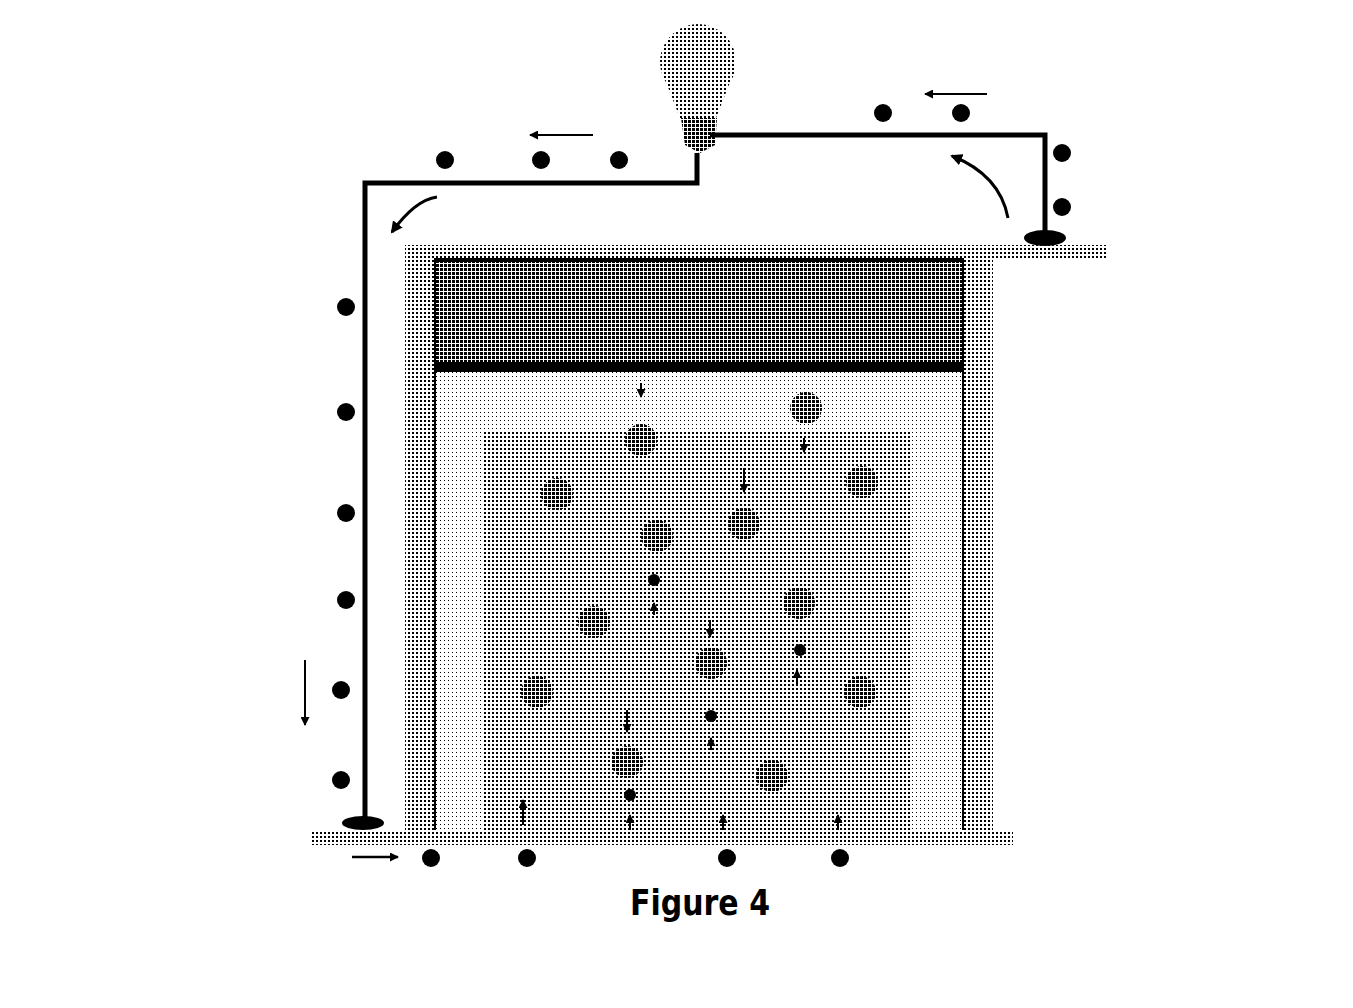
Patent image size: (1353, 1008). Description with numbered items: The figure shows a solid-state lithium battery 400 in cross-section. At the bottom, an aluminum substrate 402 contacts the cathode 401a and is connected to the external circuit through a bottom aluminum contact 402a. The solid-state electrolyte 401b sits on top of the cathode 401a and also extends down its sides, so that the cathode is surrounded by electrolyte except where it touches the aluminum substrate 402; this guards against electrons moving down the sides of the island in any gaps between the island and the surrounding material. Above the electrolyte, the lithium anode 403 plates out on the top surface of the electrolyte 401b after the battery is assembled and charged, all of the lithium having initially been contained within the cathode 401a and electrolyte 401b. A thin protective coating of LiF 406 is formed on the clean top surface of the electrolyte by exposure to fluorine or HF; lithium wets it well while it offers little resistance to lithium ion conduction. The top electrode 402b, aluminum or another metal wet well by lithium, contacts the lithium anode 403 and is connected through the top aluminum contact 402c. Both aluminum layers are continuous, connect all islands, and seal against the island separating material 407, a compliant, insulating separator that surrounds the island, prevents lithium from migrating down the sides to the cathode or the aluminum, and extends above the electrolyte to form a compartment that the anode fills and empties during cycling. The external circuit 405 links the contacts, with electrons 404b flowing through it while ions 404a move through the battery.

The battery 400 is at (621, 463).
The cathode 401a is at (530, 668).
The solid-state electrolyte 401b is at (475, 405).
The aluminum substrate 402 is at (292, 843).
The bottom aluminum contact 402a is at (333, 815).
The top electrode 402b is at (1130, 252).
The top aluminum contact 402c is at (1090, 230).
The lithium anode 403 is at (445, 320).
The ions 404a is at (1086, 152).
The electrons 404b is at (884, 692).
The external circuit 405 is at (760, 97).
The protective coating of LiF 406 is at (440, 367).
The island separating material 407 is at (403, 380).